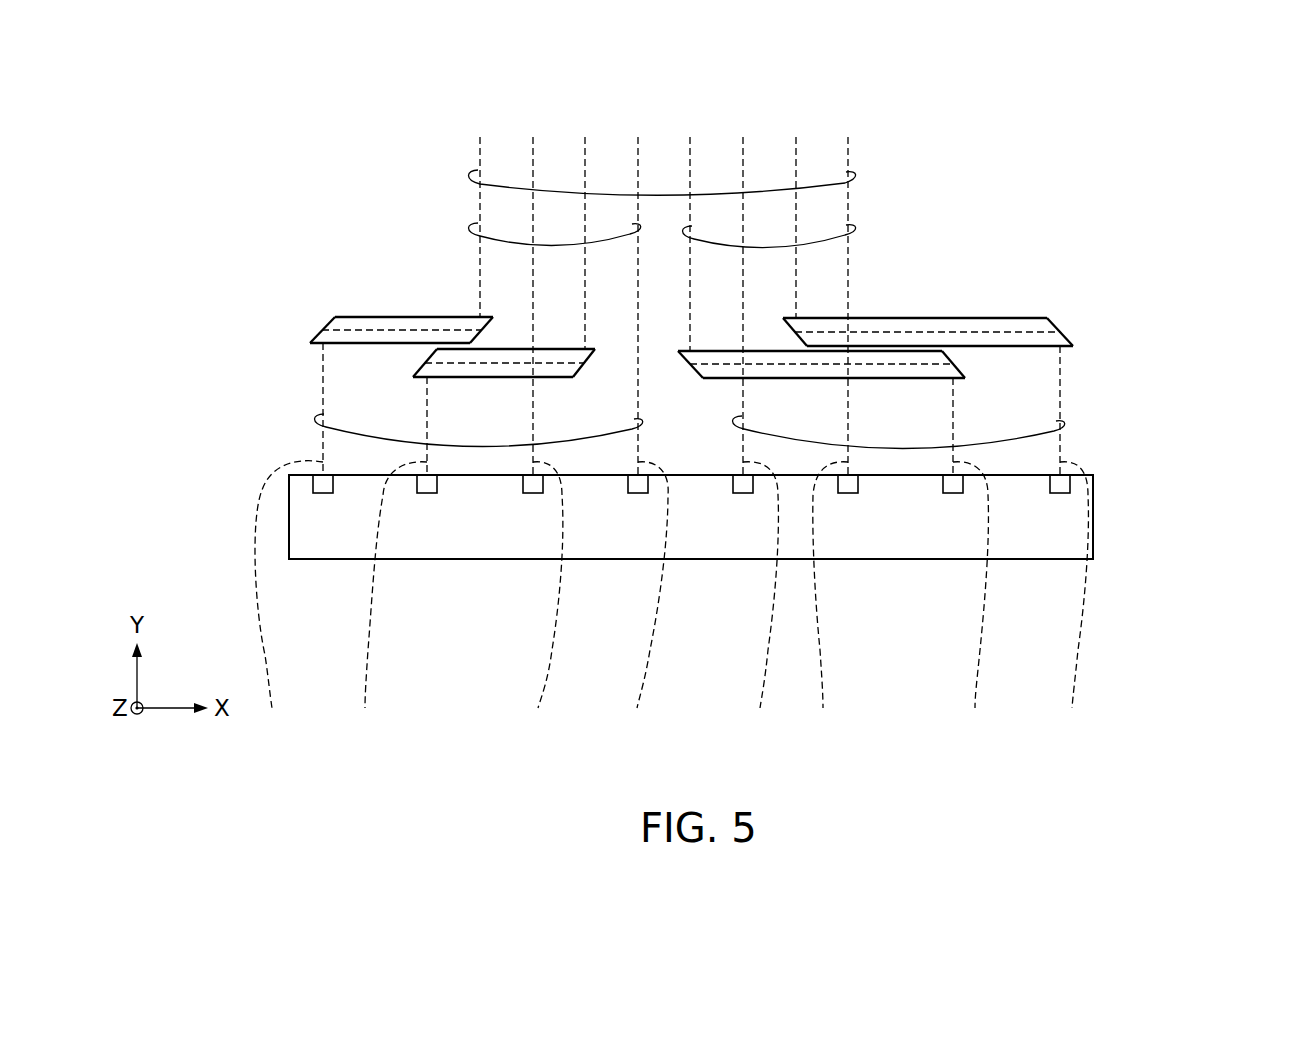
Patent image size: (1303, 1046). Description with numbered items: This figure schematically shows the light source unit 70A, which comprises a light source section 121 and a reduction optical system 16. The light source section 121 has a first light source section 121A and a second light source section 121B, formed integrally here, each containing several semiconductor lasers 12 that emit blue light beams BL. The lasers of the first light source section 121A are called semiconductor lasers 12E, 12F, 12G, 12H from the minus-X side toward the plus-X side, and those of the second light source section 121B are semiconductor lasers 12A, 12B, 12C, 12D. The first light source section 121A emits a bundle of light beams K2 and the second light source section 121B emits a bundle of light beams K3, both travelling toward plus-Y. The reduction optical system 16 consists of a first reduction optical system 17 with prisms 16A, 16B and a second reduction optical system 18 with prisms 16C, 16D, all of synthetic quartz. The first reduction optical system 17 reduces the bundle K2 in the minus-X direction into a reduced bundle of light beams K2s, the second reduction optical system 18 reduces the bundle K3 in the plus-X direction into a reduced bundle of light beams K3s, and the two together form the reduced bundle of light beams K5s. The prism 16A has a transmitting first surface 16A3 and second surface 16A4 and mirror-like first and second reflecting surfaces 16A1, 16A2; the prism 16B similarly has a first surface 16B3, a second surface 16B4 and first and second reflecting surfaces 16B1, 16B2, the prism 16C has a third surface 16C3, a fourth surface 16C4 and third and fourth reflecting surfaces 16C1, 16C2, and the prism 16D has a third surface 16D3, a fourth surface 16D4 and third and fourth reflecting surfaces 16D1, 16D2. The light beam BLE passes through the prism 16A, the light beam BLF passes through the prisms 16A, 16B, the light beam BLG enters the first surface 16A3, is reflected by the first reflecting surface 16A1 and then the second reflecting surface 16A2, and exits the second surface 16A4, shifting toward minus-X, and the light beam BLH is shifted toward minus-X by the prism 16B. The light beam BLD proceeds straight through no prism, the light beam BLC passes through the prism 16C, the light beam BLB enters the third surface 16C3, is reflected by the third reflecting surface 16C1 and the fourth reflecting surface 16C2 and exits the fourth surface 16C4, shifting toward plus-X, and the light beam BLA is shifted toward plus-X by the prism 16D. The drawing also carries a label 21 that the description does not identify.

The light source unit 70A is at (1030, 150).
The reduced bundle of light beams K5s is at (856, 176).
The reduced bundle of light beams K3s is at (466, 230).
The reduced bundle of light beams K2s is at (857, 230).
The bundle of light beams K3 is at (312, 424).
The bundle of light beams K2 is at (1070, 424).
The reduction optical system 16 is at (715, 332).
The first reduction optical system 17 is at (1183, 350).
The second reduction optical system 18 is at (205, 423).
The prism 16A is at (967, 383).
The prism 16B is at (1069, 354).
The prism 16C is at (452, 376).
The prism 16D is at (336, 347).
The first reflecting surface 16A1 is at (948, 356).
The second reflecting surface 16A2 is at (678, 358).
The first surface 16A3 is at (794, 378).
The second surface 16A4 is at (730, 351).
The first reflecting surface 16B1 is at (1047, 320).
The second reflecting surface 16B2 is at (782, 325).
The first surface 16B3 is at (986, 350).
The second surface 16B4 is at (914, 318).
The third reflecting surface 16C1 is at (418, 372).
The fourth reflecting surface 16C2 is at (600, 348).
The third surface 16C3 is at (544, 377).
The fourth surface 16C4 is at (553, 349).
The third reflecting surface 16D1 is at (335, 317).
The fourth reflecting surface 16D2 is at (498, 321).
The third surface 16D3 is at (411, 347).
The fourth surface 16D4 is at (360, 317).
The substrate 21 is at (1108, 494).
The semiconductor laser 12 is at (674, 549).
The semiconductor laser 12A is at (323, 493).
The semiconductor laser 12B is at (427, 493).
The semiconductor laser 12C is at (533, 493).
The semiconductor laser 12D is at (638, 493).
The semiconductor laser 12E is at (743, 493).
The semiconductor laser 12F is at (848, 493).
The semiconductor laser 12G is at (953, 493).
The semiconductor laser 12H is at (1060, 493).
The light source section 121 is at (422, 681).
The first light source section 121A is at (1063, 624).
The second light source section 121B is at (273, 624).
The light beam BL is at (674, 454).
The light beam BLA is at (284, 542).
The light beam BLB is at (384, 559).
The light beam BLC is at (521, 439).
The light beam BLD is at (626, 439).
The light beam BLE is at (736, 439).
The light beam BLF is at (823, 439).
The light beam BLG is at (973, 560).
The light beam BLH is at (1080, 544).